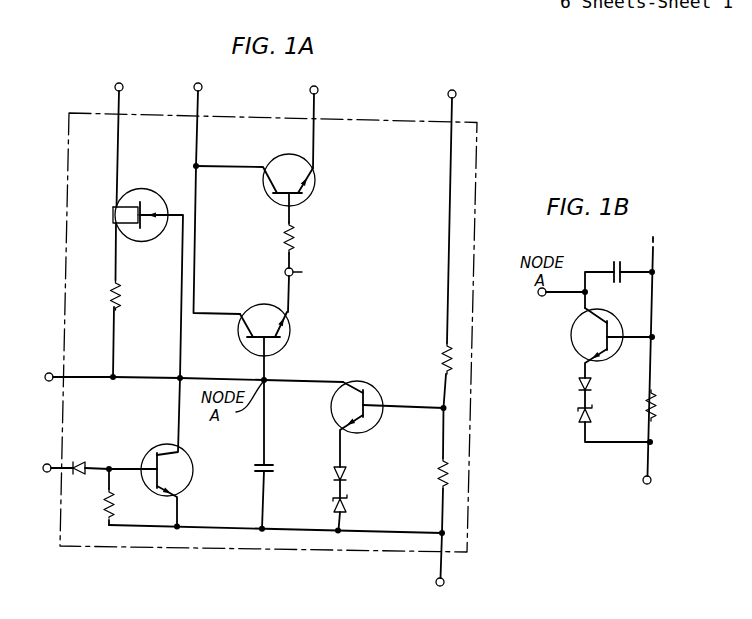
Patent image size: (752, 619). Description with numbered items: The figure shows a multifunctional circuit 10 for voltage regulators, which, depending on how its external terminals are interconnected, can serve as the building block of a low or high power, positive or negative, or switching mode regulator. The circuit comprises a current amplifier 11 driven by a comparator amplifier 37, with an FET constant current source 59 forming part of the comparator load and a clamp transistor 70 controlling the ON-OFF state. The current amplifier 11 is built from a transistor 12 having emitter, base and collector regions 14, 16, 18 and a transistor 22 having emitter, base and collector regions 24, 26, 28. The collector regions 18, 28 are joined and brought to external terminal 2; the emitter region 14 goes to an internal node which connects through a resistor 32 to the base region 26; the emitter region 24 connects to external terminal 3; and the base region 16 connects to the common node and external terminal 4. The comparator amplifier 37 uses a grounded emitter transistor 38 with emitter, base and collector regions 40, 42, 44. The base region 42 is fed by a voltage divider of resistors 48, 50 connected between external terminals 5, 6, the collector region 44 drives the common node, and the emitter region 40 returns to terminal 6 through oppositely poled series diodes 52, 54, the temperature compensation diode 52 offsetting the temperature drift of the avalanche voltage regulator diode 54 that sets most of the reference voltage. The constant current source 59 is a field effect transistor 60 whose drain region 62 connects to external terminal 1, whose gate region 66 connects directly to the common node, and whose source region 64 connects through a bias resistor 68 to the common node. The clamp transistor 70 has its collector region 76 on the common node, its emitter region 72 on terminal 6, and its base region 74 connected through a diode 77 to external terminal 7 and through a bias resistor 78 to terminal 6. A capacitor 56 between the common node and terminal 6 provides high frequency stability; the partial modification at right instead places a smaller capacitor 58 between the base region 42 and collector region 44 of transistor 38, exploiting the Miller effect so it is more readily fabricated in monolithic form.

In FIG. 1A, the external terminal 1 is at (119, 219).
In FIG. 1A, the external terminal 2 is at (217, 189).
In FIG. 1A, the external terminal 3 is at (315, 117).
In FIG. 1A, the external terminal 4 is at (186, 378).
In FIG. 1A, the external terminal 5 is at (453, 206).
In FIG. 1A, the external terminal 6 is at (438, 570).
In FIG. 1B, the external terminal 6 is at (637, 479).
In FIG. 1A, the external terminal 7 is at (50, 469).
In FIG. 1A, the multifunctional circuit 10 is at (224, 572).
In FIG. 1A, the current amplifier 11 is at (357, 246).
In FIG. 1A, the transistor 12 is at (283, 348).
In FIG. 1A, the emitter region 14 is at (286, 320).
In FIG. 1A, the base region 16 is at (262, 349).
In FIG. 1A, the collector region 18 is at (244, 324).
In FIG. 1A, the transistor 22 is at (305, 200).
In FIG. 1A, the emitter region 24 is at (314, 178).
In FIG. 1A, the base region 26 is at (288, 198).
In FIG. 1A, the collector region 28 is at (268, 182).
In FIG. 1A, the resistor 32 is at (295, 235).
In FIG. 1A, the comparator amplifier 37 is at (373, 342).
In FIG. 1A, the grounded emitter transistor 38 is at (380, 389).
In FIG. 1B, the grounded emitter transistor 38 is at (613, 352).
In FIG. 1A, the emitter region 40 is at (342, 418).
In FIG. 1B, the emitter region 40 is at (576, 353).
In FIG. 1A, the base region 42 is at (381, 418).
In FIG. 1B, the base region 42 is at (612, 328).
In FIG. 1A, the collector region 44 is at (352, 385).
In FIG. 1B, the collector region 44 is at (588, 318).
In FIG. 1A, the resistor 48 is at (442, 360).
In FIG. 1A, the resistor 50 is at (438, 471).
In FIG. 1B, the resistor 50 is at (645, 405).
In FIG. 1A, the temperature compensation diode 52 is at (346, 473).
In FIG. 1B, the temperature compensation diode 52 is at (577, 385).
In FIG. 1A, the voltage regulator diode 54 is at (350, 506).
In FIG. 1B, the voltage regulator diode 54 is at (577, 417).
In FIG. 1A, the capacitor 56 is at (266, 468).
In FIG. 1B, the capacitor 58 is at (617, 261).
In FIG. 1A, the FET constant current source 59 is at (143, 146).
In FIG. 1A, the field effect transistor 60 is at (146, 198).
In FIG. 1A, the drain region 62 is at (129, 205).
In FIG. 1A, the source region 64 is at (128, 228).
In FIG. 1A, the gate region 66 is at (161, 213).
In FIG. 1A, the bias resistor 68 is at (122, 291).
In FIG. 1A, the clamp transistor 70 is at (147, 450).
In FIG. 1A, the emitter region 72 is at (172, 495).
In FIG. 1A, the base region 74 is at (145, 467).
In FIG. 1A, the collector region 76 is at (173, 457).
In FIG. 1A, the diode 77 is at (78, 461).
In FIG. 1A, the bias resistor 78 is at (101, 503).